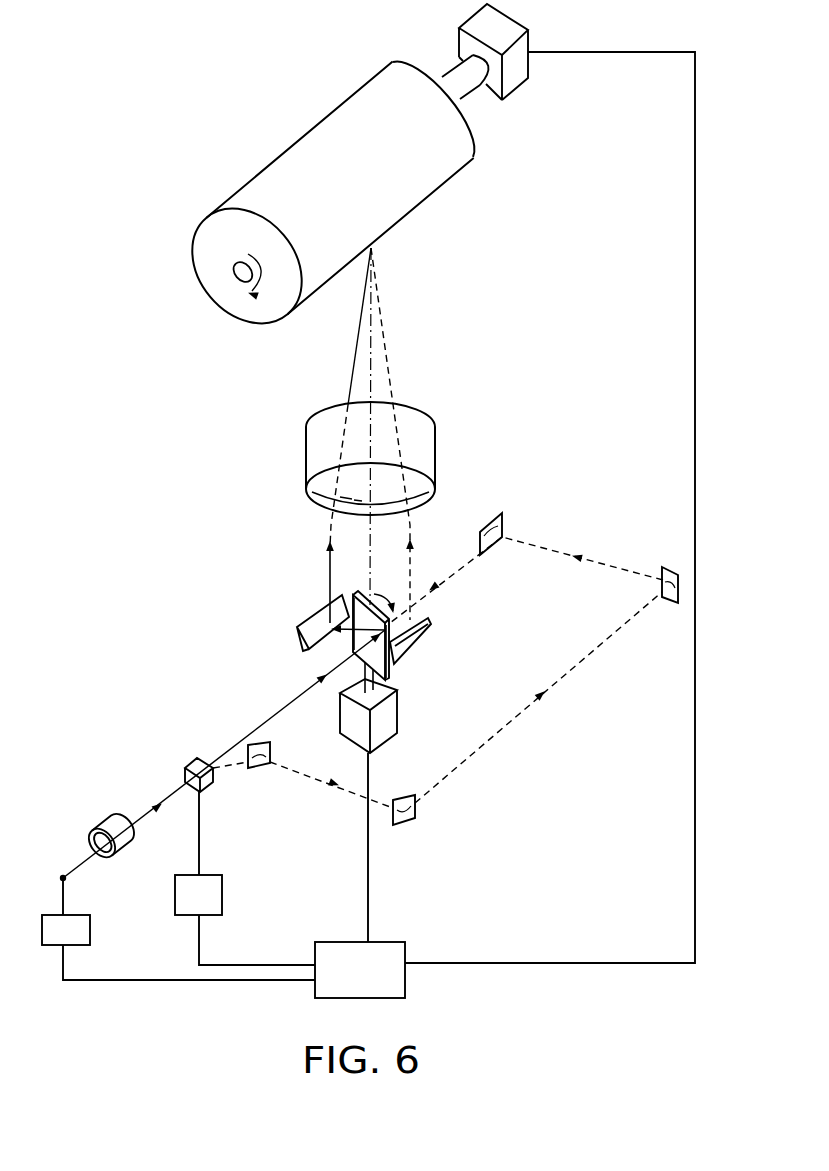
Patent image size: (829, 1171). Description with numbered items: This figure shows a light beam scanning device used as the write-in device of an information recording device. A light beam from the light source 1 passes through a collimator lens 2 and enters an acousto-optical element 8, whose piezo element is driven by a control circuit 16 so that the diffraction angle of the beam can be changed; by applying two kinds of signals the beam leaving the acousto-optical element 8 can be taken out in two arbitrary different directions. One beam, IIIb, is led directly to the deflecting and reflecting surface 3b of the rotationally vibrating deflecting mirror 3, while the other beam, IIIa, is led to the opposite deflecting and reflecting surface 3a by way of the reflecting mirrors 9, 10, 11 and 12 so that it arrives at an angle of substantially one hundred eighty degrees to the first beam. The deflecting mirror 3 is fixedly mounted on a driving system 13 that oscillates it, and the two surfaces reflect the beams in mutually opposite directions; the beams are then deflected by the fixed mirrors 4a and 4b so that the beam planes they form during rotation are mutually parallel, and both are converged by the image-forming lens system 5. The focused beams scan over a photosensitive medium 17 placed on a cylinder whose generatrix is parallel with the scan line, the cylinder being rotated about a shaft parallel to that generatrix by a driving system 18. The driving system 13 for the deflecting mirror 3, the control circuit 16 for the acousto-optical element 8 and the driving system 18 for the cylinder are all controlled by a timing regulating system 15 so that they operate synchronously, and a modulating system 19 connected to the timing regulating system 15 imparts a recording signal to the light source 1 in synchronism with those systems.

The light source 1 is at (62, 877).
The collimator lens 2 is at (127, 850).
The deflecting mirror 3 is at (360, 597).
The deflecting and reflecting surface 3a is at (412, 632).
The deflecting and reflecting surface 3b is at (360, 654).
The fixed mirror 4a is at (424, 638).
The fixed mirror 4b is at (310, 630).
The image-forming lens system 5 is at (430, 445).
The acousto-optical element 8 is at (190, 768).
The reflecting mirror 9 is at (261, 766).
The reflecting mirror 10 is at (416, 817).
The reflecting mirror 11 is at (663, 600).
The reflecting mirror 12 is at (503, 519).
The driving system 13 is at (396, 720).
The timing regulating system 15 is at (397, 945).
The control circuit 16 is at (222, 897).
The photosensitive medium 17 is at (468, 150).
The driving system 18 is at (513, 25).
The modulating system 19 is at (90, 937).
The split light beam a IIIa is at (237, 765).
The split light beam b IIIb is at (240, 742).